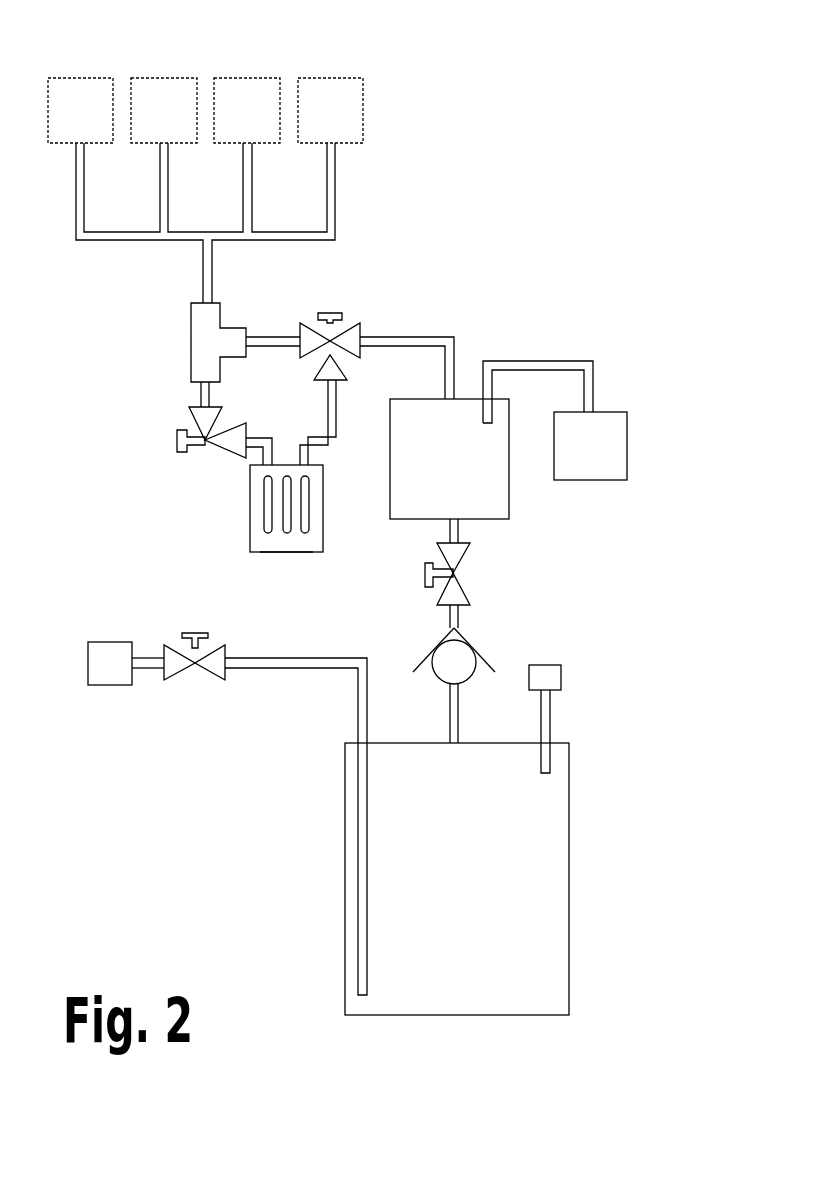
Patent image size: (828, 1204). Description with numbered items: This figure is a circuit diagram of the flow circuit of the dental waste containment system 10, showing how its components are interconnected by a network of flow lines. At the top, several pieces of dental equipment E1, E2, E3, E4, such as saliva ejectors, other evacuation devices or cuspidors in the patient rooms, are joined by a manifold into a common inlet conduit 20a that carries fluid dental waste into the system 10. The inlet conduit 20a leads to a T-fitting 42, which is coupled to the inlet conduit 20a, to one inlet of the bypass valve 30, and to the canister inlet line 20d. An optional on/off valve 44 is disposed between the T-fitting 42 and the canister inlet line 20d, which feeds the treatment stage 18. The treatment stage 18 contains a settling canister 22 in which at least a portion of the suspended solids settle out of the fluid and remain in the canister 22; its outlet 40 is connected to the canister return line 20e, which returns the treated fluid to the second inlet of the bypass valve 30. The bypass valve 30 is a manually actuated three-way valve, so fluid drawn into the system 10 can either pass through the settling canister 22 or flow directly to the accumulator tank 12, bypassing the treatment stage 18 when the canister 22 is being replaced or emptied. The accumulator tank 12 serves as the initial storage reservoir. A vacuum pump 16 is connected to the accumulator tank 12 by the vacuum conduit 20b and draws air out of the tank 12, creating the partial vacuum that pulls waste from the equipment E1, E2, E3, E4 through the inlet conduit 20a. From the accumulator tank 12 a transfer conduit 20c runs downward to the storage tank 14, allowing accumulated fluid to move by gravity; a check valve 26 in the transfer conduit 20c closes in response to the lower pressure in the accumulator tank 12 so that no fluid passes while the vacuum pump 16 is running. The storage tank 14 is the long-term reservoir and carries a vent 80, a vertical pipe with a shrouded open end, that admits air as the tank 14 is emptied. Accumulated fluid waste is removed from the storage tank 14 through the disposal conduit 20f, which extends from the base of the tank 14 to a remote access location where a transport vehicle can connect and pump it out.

The dental equipment E1 is at (84, 77).
The dental equipment E2 is at (163, 77).
The dental equipment E3 is at (246, 77).
The dental equipment E4 is at (331, 77).
The dental waste containment system 10 is at (676, 262).
The accumulator tank 12 is at (509, 497).
The storage tank 14 is at (569, 795).
The vacuum pump 16 is at (627, 449).
The treatment stage 18 is at (250, 505).
The inlet conduit 20a is at (212, 268).
The vacuum conduit 20b is at (545, 362).
The transfer conduit 20c is at (459, 623).
The canister inlet line 20d is at (258, 436).
The canister return line 20e is at (334, 418).
The disposal conduit 20f is at (305, 656).
The settling canister 22 is at (282, 550).
The check valve 26 is at (436, 680).
The bypass valve 30 is at (353, 326).
The outlet 40 is at (270, 497).
The T-fitting 42 is at (197, 340).
The on/off valve 44 is at (210, 440).
The vent 80 is at (548, 717).